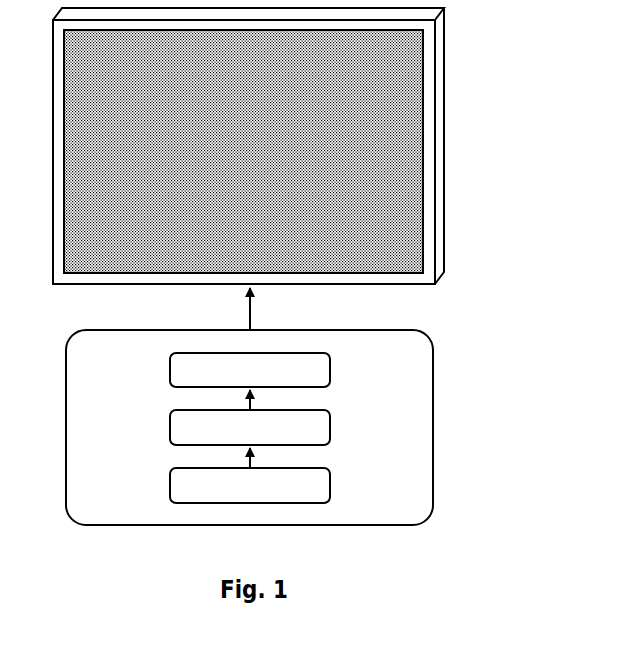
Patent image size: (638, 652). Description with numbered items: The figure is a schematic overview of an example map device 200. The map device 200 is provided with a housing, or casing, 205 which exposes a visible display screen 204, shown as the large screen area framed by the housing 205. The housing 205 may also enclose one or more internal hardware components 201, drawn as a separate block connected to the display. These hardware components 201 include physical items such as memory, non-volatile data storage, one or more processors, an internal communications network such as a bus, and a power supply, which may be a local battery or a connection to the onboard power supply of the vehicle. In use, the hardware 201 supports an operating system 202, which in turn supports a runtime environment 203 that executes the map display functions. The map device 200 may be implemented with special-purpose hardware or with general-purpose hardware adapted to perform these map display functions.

The map device 200 is at (498, 280).
The hardware components 201 is at (332, 480).
The operating system 202 is at (332, 422).
The runtime environment 203 is at (332, 365).
The display screen 204 is at (423, 180).
The housing 205 is at (445, 88).